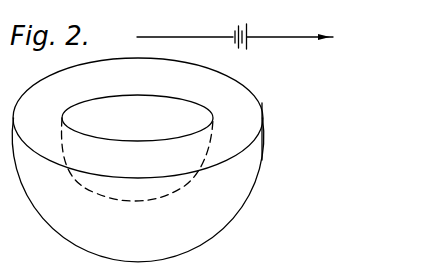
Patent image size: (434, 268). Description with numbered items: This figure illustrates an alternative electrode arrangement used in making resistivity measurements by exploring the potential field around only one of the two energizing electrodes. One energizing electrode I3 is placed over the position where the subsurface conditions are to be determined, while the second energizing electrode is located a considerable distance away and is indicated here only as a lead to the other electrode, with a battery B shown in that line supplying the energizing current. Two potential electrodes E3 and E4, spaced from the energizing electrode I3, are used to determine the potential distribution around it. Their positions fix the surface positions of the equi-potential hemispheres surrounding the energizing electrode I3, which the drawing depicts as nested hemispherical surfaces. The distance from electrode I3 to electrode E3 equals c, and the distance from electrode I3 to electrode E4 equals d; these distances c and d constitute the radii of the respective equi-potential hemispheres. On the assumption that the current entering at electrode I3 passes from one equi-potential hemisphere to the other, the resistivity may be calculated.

The energizing electrode I3 is at (137, 37).
The potential electrode E3 is at (226, 103).
The potential electrode E4 is at (251, 103).
The battery B is at (248, 35).
The distance I3–E3 c is at (80, 164).
The distance I3–E4 d is at (133, 127).